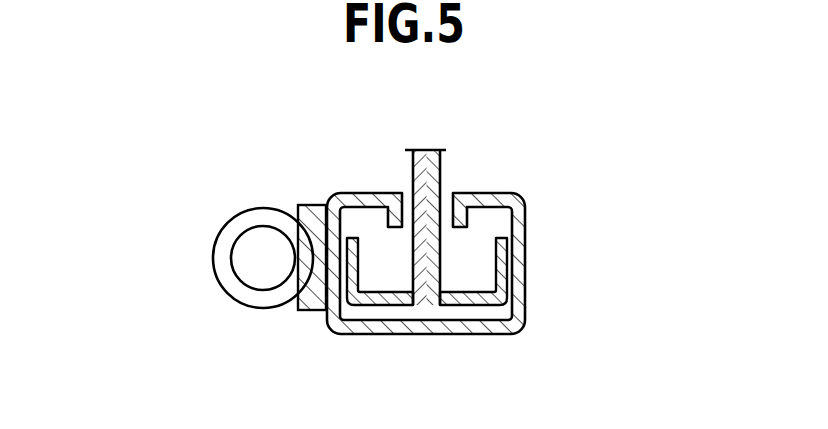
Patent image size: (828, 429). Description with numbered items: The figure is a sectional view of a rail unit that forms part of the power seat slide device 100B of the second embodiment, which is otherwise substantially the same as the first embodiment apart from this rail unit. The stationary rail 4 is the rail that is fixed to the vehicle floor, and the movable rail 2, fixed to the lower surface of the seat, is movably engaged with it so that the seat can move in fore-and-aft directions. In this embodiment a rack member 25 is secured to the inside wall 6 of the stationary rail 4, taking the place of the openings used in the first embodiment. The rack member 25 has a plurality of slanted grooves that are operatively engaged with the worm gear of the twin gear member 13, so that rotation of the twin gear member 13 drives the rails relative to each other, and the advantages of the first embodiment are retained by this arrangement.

The power seat slide device 100B is at (660, 117).
The twin gear member 13 is at (218, 299).
The rack member 25 is at (313, 205).
The stationary rail 4 is at (526, 243).
The inside wall 6 is at (356, 238).
The movable rail 2 is at (441, 160).